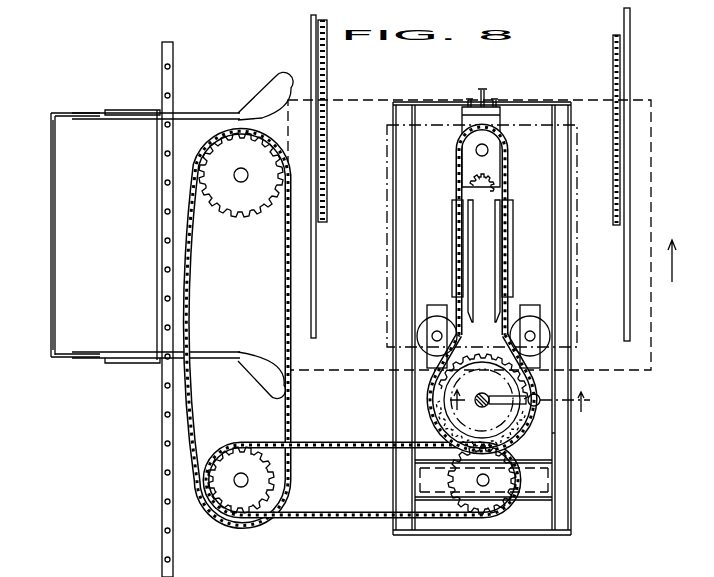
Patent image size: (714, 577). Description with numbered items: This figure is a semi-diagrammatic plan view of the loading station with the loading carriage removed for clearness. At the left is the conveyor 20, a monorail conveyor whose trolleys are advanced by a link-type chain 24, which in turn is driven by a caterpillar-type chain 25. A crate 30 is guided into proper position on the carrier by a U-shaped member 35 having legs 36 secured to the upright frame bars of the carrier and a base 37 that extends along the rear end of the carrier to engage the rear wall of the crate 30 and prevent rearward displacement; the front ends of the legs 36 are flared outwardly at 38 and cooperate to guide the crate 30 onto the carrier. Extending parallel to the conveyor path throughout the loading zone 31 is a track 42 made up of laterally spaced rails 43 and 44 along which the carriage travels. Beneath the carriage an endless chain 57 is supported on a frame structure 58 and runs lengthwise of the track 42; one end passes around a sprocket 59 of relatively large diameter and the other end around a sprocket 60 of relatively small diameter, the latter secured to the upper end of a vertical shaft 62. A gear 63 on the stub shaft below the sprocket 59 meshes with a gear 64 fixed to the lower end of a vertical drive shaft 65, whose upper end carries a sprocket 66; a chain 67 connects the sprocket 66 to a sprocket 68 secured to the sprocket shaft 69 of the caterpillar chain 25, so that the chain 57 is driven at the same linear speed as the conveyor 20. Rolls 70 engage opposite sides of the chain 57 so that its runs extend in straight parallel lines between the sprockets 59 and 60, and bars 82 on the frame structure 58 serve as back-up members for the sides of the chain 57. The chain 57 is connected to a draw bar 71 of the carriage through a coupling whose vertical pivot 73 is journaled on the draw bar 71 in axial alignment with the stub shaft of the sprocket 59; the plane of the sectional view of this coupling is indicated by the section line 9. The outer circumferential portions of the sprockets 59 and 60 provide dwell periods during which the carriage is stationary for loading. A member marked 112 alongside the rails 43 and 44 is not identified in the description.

The section line 9- 9 is at (563, 326).
The conveyor 20 is at (160, 462).
The link-type chain 24 is at (165, 518).
The caterpillar-type chain 25 is at (290, 436).
The crate 30 is at (370, 100).
The loading zone 31 is at (367, 236).
The U-shaped member 35 is at (50, 295).
The legs 36 is at (124, 122).
The base 37 is at (56, 238).
The flared front ends 38 is at (275, 96).
The track 42 is at (309, 32).
The rail 43 is at (318, 62).
The rail 44 is at (630, 68).
The endless chain 57 is at (458, 198).
The frame structure 58 is at (567, 520).
The sprocket 59 is at (487, 352).
The sprocket 60 is at (503, 180).
The vertical shaft 62 is at (476, 150).
The gear 63 is at (553, 437).
The gear 64 is at (527, 495).
The vertical drive shaft 65 is at (478, 478).
The sprocket 66 is at (477, 506).
The chain 67 is at (345, 518).
The sprocket 68 is at (266, 492).
The sprocket shaft 69 is at (242, 488).
The rolls 70 is at (437, 318).
The draw bar 71 is at (494, 413).
The vertical pivot 73 is at (517, 400).
The bars 82 is at (493, 247).
The rack chain 112 is at (612, 62).